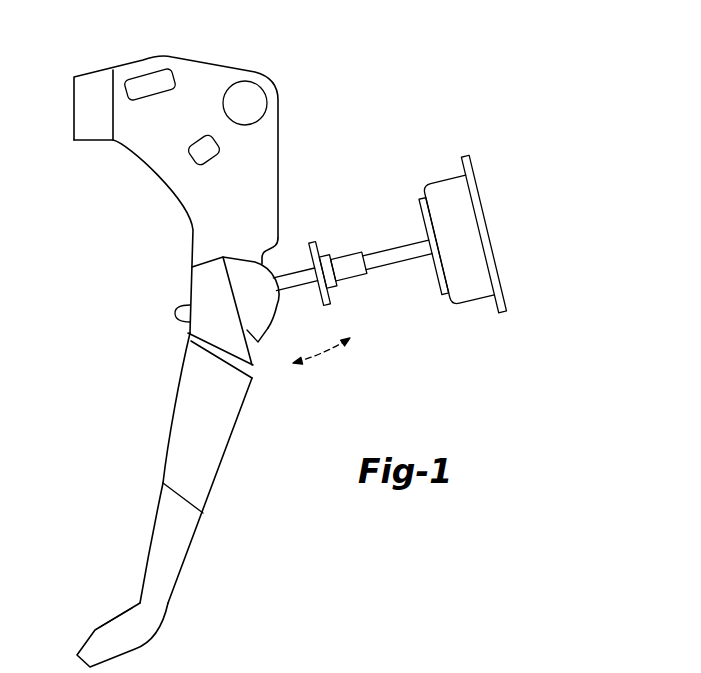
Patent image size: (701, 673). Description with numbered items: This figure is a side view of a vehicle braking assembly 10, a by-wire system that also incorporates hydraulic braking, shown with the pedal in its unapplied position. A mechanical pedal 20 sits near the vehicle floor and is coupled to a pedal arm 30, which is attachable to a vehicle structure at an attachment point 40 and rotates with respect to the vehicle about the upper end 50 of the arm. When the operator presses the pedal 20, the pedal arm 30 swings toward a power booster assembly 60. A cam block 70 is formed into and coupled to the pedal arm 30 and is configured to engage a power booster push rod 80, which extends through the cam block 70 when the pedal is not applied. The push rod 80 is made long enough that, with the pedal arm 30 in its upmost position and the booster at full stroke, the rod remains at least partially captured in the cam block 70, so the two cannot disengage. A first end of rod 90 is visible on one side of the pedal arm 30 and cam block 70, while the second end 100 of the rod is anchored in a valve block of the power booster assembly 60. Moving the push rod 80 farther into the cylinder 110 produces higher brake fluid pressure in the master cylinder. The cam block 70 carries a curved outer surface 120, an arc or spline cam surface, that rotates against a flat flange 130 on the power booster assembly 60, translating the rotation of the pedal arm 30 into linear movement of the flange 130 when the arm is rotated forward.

The vehicle braking assembly 10 is at (437, 97).
The mechanical pedal 20 is at (87, 637).
The pedal arm 30 is at (178, 543).
The attachment point 40 is at (258, 92).
The upper end of the pedal arm 50 is at (340, 45).
The power booster assembly 60 is at (421, 235).
The cam block 70 is at (260, 328).
The power booster push rod 80 is at (287, 297).
The first end of rod 90 is at (175, 317).
The second end of the rod 100 is at (415, 263).
The cylinder 110 is at (459, 229).
The outer surface 120 is at (270, 261).
The flange 130 is at (314, 246).